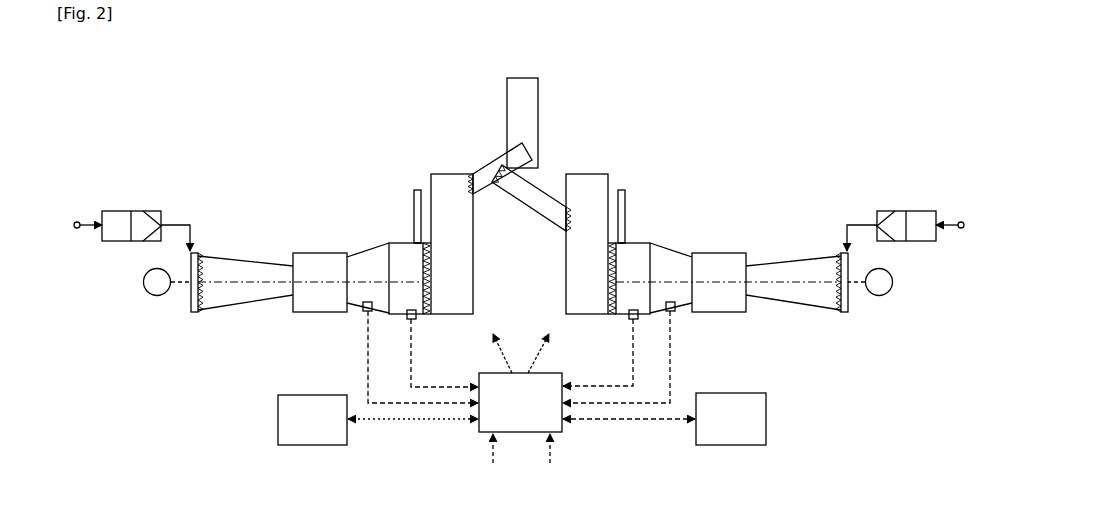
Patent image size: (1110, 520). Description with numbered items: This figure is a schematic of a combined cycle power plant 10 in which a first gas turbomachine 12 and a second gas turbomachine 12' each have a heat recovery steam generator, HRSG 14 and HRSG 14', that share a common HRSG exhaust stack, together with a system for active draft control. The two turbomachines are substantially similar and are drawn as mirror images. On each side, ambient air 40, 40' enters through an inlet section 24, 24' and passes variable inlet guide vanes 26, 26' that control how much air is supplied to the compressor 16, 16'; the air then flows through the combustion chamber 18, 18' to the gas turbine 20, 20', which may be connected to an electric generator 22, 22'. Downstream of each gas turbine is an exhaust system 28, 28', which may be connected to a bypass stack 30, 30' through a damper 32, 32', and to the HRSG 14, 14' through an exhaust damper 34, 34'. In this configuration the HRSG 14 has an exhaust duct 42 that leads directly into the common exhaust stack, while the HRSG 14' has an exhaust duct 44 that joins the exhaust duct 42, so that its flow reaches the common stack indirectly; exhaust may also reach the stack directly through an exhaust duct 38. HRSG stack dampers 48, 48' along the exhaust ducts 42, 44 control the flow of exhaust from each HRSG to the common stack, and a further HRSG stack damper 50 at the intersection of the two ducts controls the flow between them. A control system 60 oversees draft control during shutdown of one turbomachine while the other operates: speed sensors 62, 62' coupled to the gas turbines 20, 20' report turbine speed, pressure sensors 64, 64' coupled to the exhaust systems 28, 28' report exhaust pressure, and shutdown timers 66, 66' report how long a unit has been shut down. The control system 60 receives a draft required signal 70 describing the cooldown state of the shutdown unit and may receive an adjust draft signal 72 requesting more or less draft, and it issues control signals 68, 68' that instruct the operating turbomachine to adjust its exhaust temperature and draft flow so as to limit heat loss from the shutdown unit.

The combined cycle power plant 10 is at (275, 97).
The first gas turbomachine 12 is at (273, 250).
The second gas turbomachine 12' is at (765, 255).
The heat recovery steam generator 14 is at (452, 244).
The heat recovery steam generator 14' is at (587, 244).
The compressor 16 is at (245, 283).
The compressor 16' is at (793, 283).
The combustion chamber 18 is at (320, 282).
The combustion chamber 18' is at (719, 282).
The gas turbine 20 is at (368, 278).
The gas turbine 20' is at (671, 278).
The electric generator 22 is at (168, 282).
The electric generator 22' is at (870, 282).
The inlet section 24 is at (132, 232).
The inlet section 24' is at (905, 233).
The variable inlet guide vanes 26 is at (205, 270).
The variable inlet guide vanes 26' is at (831, 273).
The exhaust system 28 is at (410, 278).
The exhaust system 28' is at (629, 278).
The bypass stack 30 is at (403, 211).
The bypass stack 30' is at (635, 211).
The damper 32 is at (399, 233).
The damper 32' is at (640, 232).
The exhaust damper 34 is at (443, 278).
The exhaust damper 34' is at (593, 278).
The exhaust duct 38 is at (522, 123).
The ambient air 40 is at (117, 215).
The ambient air 40' is at (920, 214).
The exhaust duct 42 is at (482, 162).
The exhaust duct 44 is at (535, 215).
The HRSG stack damper 48 is at (455, 175).
The HRSG stack damper 48' is at (581, 207).
The HRSG stack damper 50 is at (510, 188).
The control system 60 is at (520, 402).
The speed sensor 62 is at (350, 317).
The speed sensor 62' is at (657, 319).
The pressure sensor 64 is at (396, 327).
The pressure sensor 64' is at (615, 325).
The shutdown timer 66 is at (378, 420).
The shutdown timer 66' is at (664, 419).
The control signal 68 is at (496, 353).
The control signal 68' is at (546, 353).
The draft required signal 70 is at (463, 465).
The adjust draft signal 72 is at (573, 465).